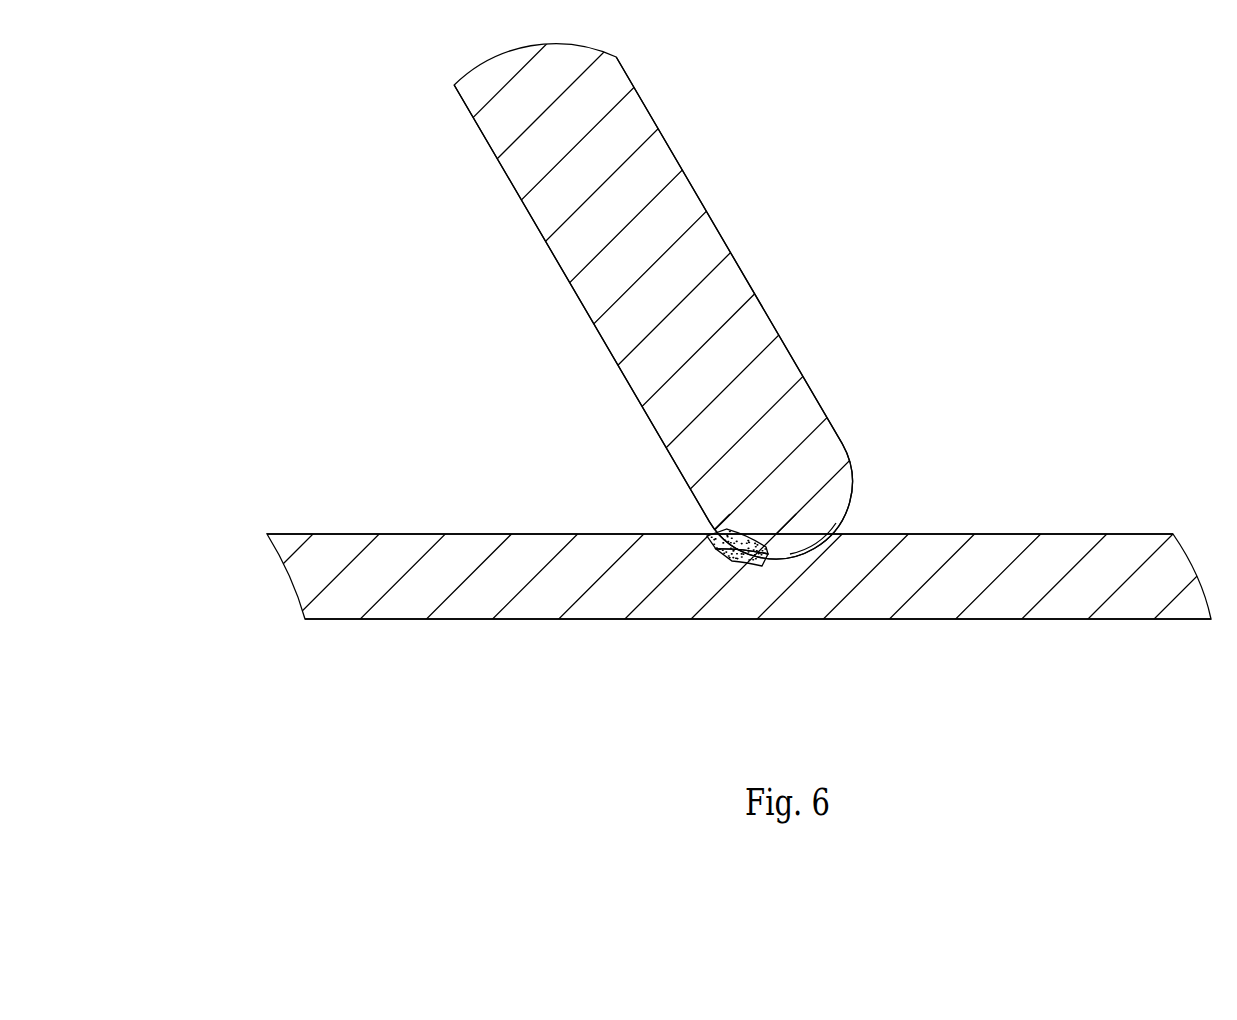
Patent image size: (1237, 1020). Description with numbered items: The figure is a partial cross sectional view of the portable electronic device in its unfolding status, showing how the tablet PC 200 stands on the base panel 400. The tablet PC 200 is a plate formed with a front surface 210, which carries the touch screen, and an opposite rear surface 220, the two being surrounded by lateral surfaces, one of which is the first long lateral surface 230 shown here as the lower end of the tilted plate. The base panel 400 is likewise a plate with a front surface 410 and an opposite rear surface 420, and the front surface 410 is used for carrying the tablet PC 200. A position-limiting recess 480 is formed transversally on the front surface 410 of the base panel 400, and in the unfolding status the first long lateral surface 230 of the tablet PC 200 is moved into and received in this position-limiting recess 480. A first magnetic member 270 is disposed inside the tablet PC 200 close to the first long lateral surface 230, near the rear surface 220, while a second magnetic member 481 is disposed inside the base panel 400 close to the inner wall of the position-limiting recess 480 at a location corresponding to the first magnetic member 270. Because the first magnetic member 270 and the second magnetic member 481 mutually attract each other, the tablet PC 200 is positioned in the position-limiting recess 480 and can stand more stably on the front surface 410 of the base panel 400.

The tablet PC 200 is at (703, 172).
The front surface 210 is at (772, 320).
The rear surface 220 is at (578, 302).
The first long lateral surface 230 is at (836, 518).
The first magnetic member 270 is at (768, 557).
The base panel 400 is at (523, 650).
The front surface 410 is at (357, 534).
The rear surface 420 is at (1105, 620).
The position-limiting recess 480 is at (807, 553).
The second magnetic member 481 is at (737, 560).